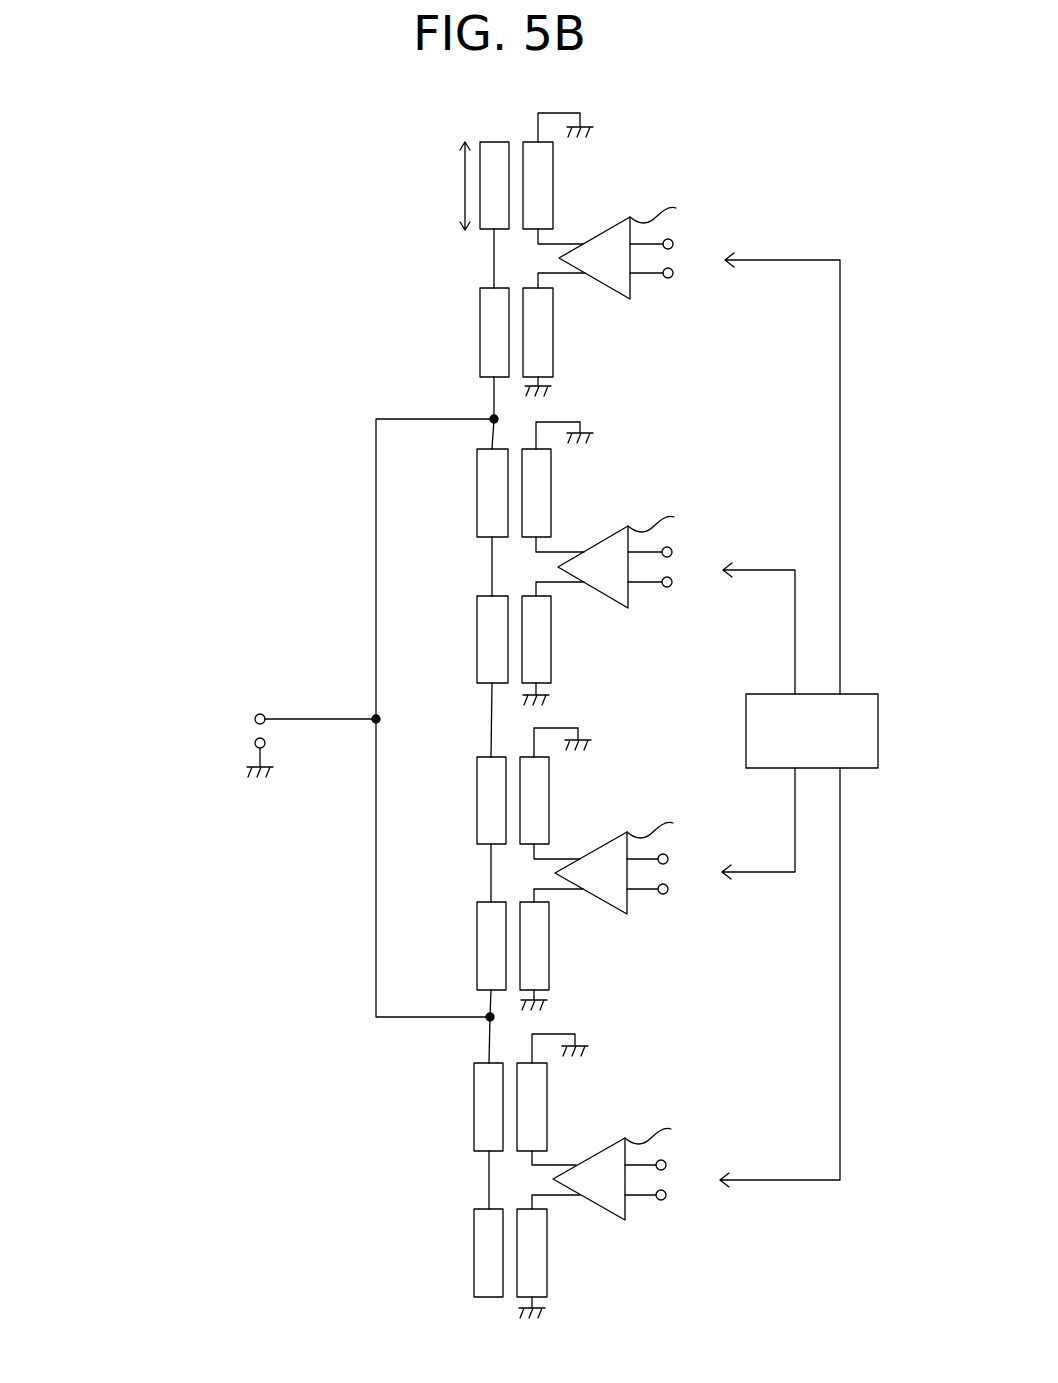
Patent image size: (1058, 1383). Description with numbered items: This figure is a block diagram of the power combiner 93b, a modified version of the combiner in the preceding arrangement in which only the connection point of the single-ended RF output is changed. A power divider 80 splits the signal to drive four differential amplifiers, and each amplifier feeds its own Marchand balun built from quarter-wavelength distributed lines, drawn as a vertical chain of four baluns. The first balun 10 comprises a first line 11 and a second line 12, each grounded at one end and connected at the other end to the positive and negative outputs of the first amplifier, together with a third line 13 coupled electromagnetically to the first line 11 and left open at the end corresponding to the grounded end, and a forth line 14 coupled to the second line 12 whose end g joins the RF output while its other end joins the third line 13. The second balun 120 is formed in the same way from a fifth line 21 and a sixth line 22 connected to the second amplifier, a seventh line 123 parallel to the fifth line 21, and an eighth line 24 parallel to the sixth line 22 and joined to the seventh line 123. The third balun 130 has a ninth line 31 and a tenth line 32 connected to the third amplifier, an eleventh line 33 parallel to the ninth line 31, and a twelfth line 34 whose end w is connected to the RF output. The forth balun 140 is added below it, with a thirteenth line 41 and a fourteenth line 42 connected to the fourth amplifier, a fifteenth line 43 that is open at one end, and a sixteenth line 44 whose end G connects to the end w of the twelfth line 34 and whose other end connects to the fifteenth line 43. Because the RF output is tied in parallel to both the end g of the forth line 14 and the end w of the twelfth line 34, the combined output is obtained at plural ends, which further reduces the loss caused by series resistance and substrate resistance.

The power combiner 93b is at (168, 653).
The first balun 10 is at (369, 242).
The first line 11 is at (553, 164).
The second line 12 is at (553, 340).
The third line 13 is at (480, 229).
The forth line 14 is at (480, 300).
The second balun 120 is at (333, 567).
The fifth line 21 is at (551, 660).
The sixth line 22 is at (551, 490).
The eighth line 24 is at (477, 500).
The seventh line 123 is at (477, 641).
The third balun 130 is at (333, 872).
The ninth line 31 is at (549, 797).
The tenth line 32 is at (549, 964).
The eleventh line 33 is at (477, 805).
The twelfth line 34 is at (477, 935).
The forth balun 140 is at (365, 1182).
The thirteenth line 41 is at (547, 1272).
The fourteenth line 42 is at (547, 1102).
The fifteenth line 43 is at (474, 1255).
The sixteenth line 44 is at (474, 1108).
The power divider 80 is at (848, 694).